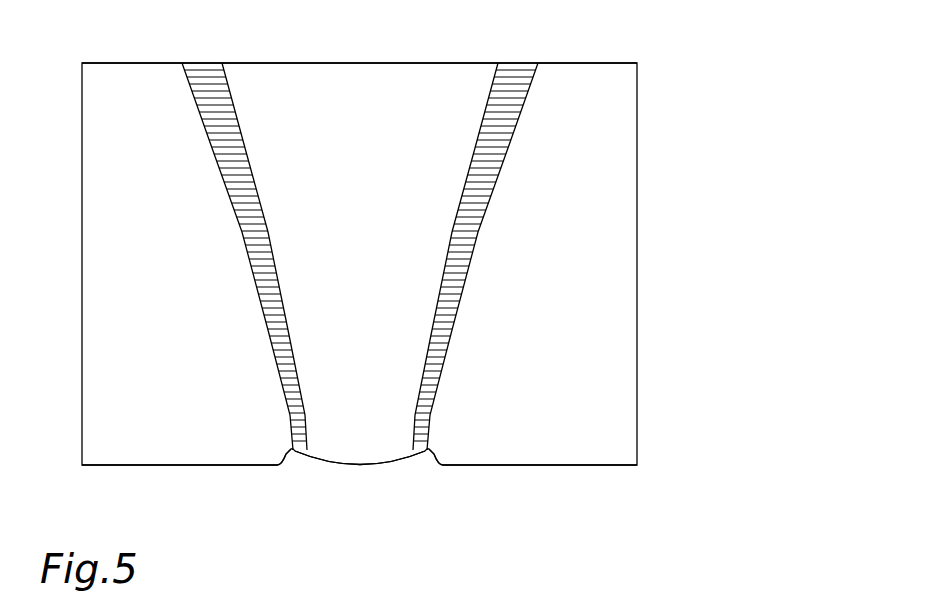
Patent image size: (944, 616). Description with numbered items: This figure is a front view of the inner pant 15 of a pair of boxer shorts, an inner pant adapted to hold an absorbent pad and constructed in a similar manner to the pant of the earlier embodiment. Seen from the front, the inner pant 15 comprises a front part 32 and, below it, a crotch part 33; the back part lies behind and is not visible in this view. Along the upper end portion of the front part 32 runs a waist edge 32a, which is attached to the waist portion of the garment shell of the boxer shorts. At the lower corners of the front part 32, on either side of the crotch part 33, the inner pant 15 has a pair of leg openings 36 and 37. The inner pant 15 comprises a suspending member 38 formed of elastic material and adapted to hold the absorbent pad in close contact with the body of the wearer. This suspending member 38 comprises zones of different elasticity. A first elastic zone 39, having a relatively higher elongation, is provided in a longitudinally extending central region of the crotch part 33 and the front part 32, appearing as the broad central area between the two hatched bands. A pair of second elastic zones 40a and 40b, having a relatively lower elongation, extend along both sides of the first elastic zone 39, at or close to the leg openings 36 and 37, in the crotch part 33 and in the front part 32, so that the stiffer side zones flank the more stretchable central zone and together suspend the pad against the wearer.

The inner pant 15 is at (718, 81).
The front part 32 is at (597, 199).
The waist edge 32a is at (574, 62).
The crotch part 33 is at (372, 465).
The leg opening 36 is at (185, 466).
The leg opening 37 is at (535, 466).
The suspending member 38 is at (332, 427).
The first elastic zone 39 is at (370, 191).
The second elastic zone 40a is at (262, 248).
The second elastic zone 40b is at (466, 243).